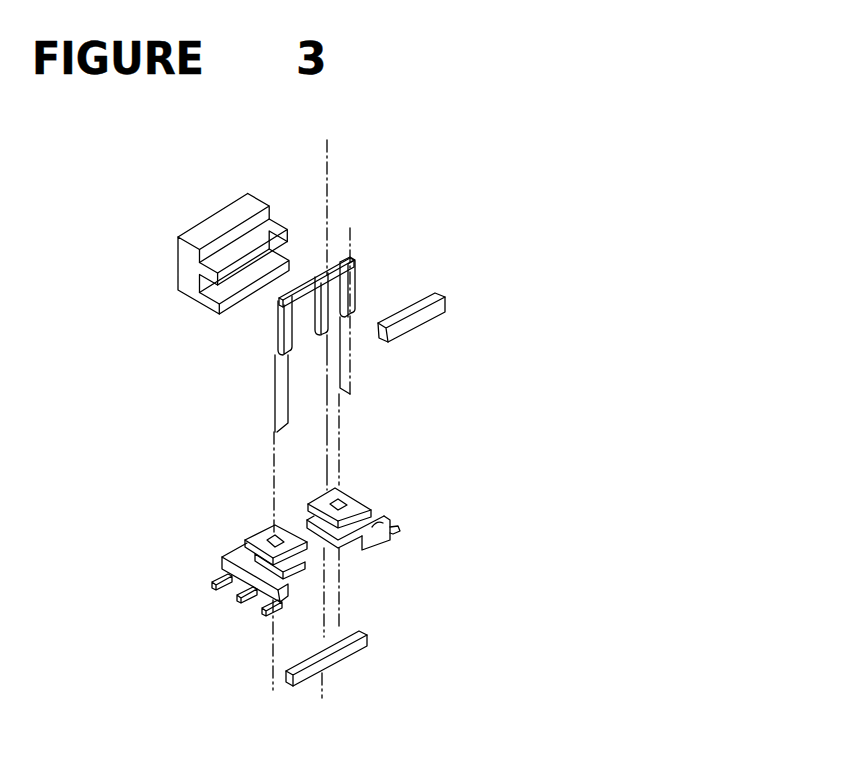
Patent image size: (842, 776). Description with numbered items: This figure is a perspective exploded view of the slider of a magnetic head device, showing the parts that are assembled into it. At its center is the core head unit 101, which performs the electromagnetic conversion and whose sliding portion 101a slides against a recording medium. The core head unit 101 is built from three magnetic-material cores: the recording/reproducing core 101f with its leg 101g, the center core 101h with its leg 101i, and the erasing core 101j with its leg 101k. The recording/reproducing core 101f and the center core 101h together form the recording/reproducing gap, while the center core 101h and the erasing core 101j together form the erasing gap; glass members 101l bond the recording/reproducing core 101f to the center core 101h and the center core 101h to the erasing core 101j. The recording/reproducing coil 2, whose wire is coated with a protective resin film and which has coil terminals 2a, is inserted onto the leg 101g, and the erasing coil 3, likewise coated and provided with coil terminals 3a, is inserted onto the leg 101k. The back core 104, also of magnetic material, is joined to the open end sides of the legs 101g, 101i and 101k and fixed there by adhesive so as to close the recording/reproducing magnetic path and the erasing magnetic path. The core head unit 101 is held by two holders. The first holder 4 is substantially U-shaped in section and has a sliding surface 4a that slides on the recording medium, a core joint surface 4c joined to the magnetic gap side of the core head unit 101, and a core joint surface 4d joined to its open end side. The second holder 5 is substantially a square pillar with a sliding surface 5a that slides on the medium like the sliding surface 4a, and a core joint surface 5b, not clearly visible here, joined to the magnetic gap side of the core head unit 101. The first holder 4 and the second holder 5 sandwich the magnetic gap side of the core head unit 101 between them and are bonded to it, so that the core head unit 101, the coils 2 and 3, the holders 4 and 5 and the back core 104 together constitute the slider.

The recording/reproducing coil 2 is at (397, 496).
The coil terminals 2a is at (400, 531).
The erasing coil 3 is at (212, 552).
The coil terminals 3a is at (213, 583).
The first holder 4 is at (219, 245).
The sliding surface 4a is at (236, 210).
The core joint surface 4c is at (292, 298).
The core joint surface 4d is at (224, 320).
The second holder 5 is at (440, 337).
The sliding surface 5a is at (440, 295).
The core joint surface 5b is at (378, 339).
The core head unit 101 is at (294, 276).
The sliding portion 101a is at (316, 278).
The recording/reproducing core 101f is at (360, 268).
The leg of the recording/reproducing core 101g is at (358, 295).
The center core 101h is at (318, 332).
The leg of the center core 101i is at (332, 337).
The erasing core 101j is at (283, 322).
The leg of the erasing core 101k is at (280, 345).
The glass members 101l is at (334, 272).
The back core 104 is at (348, 633).